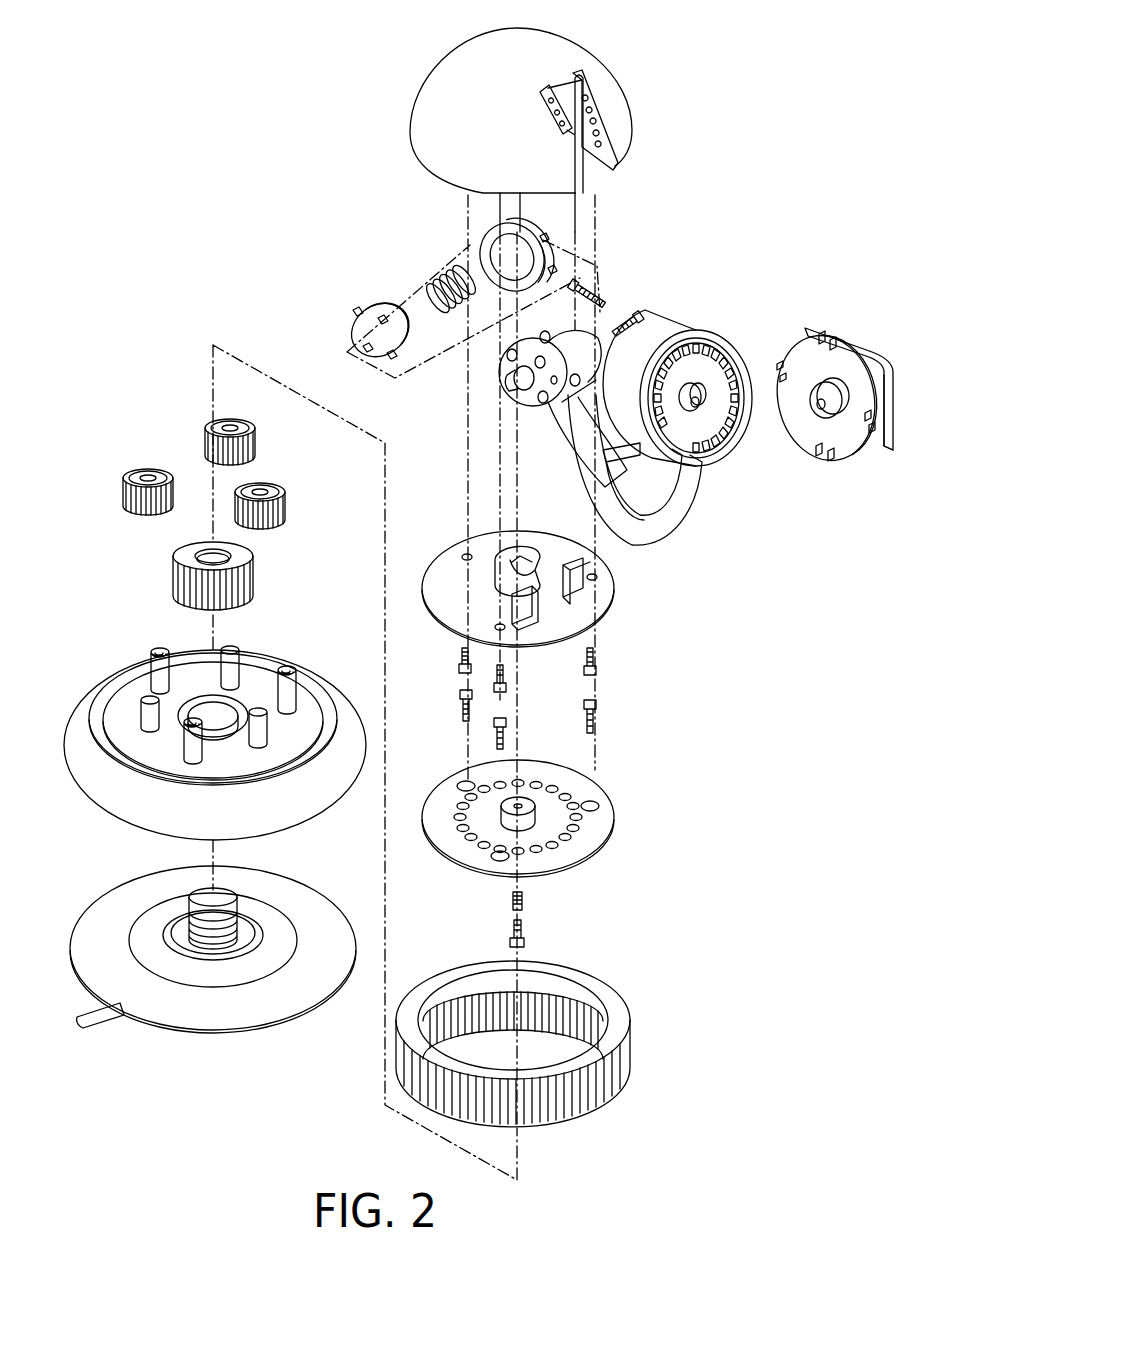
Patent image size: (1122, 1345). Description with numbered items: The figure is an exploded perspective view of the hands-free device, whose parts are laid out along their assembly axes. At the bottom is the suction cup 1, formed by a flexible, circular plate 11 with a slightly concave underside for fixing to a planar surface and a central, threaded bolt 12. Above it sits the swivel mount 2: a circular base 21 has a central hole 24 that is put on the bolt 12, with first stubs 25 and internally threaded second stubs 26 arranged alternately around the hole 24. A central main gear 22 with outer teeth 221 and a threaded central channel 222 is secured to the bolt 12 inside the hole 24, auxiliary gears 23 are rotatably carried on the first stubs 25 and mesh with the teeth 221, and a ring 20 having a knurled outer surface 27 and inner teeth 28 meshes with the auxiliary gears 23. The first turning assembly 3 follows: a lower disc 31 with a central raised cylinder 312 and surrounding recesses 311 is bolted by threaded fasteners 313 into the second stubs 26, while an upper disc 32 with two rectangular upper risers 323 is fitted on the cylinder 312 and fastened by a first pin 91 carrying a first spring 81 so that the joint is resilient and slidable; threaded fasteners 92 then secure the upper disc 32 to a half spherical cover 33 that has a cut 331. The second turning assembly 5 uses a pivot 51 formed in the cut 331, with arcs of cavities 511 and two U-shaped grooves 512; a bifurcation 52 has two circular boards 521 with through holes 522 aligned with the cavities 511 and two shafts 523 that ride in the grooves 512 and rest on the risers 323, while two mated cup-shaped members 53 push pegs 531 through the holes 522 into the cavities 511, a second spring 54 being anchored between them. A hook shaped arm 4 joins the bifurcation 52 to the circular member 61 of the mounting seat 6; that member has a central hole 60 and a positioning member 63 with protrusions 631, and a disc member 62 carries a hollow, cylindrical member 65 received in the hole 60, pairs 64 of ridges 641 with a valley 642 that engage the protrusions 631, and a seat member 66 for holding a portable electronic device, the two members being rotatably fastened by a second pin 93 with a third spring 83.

The suction cup 1 is at (213, 962).
The flexible, circular plate 11 is at (180, 1012).
The central, threaded bolt 12 is at (240, 920).
The swivel mount 2 is at (122, 652).
The ring 20 is at (632, 1040).
The circular base 21 is at (110, 805).
The central main gear 22 is at (240, 568).
The outer teeth 221 is at (180, 575).
The central channel 222 is at (200, 553).
The auxiliary gears 23 is at (280, 488).
The central hole 24 is at (240, 705).
The first stubs 25 is at (260, 680).
The second stubs 26 is at (295, 690).
The knurled outer surface 27 is at (452, 975).
The inner teeth 28 is at (585, 1000).
The first turning assembly 3 is at (670, 668).
The lower disc 31 is at (605, 822).
The recesses 311 is at (565, 840).
The central raised cylinder 312 is at (535, 800).
The threaded fasteners 313 is at (430, 705).
The upper disc 32 is at (612, 582).
The upper risers 323 is at (578, 590).
The half spherical cover 33 is at (430, 95).
The cut 331 is at (588, 175).
The hook shaped arm 4 is at (665, 532).
The second turning assembly 5 is at (487, 403).
The pivot 51 is at (612, 145).
The cavities 511 is at (600, 118).
The U-shaped grooves 512 is at (575, 105).
The bifurcation 52 is at (497, 350).
The circular boards 521 is at (560, 408).
The through holes 522 is at (541, 397).
The shafts 523 is at (508, 380).
The cup-shaped members 53 is at (378, 305).
The pegs 531 is at (356, 313).
The second spring 54 is at (448, 275).
The mounting seat 6 is at (842, 376).
The central hole 60 is at (726, 381).
The circular member 61 is at (678, 315).
The disc member 62 is at (848, 458).
The positioning member 63 is at (738, 345).
The protrusions 631 is at (700, 405).
The pairs of ridges 64 is at (875, 348).
The ridge 641 is at (822, 334).
The valley 642 is at (835, 340).
The hollow, cylindrical member 65 is at (718, 410).
The seat member 66 is at (888, 452).
The first spring 81 is at (525, 898).
The third spring 83 is at (640, 312).
The first pin 91 is at (525, 930).
The threaded fasteners 92 is at (598, 677).
The second pin 93 is at (592, 282).